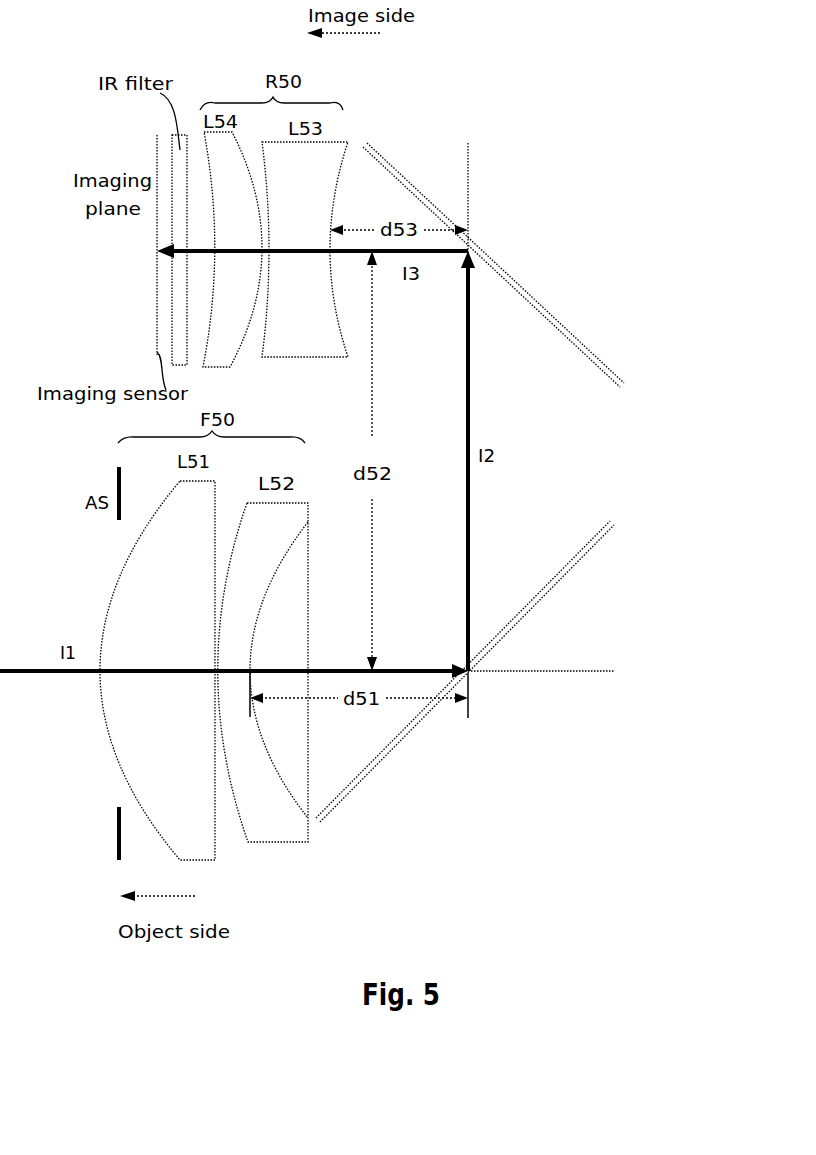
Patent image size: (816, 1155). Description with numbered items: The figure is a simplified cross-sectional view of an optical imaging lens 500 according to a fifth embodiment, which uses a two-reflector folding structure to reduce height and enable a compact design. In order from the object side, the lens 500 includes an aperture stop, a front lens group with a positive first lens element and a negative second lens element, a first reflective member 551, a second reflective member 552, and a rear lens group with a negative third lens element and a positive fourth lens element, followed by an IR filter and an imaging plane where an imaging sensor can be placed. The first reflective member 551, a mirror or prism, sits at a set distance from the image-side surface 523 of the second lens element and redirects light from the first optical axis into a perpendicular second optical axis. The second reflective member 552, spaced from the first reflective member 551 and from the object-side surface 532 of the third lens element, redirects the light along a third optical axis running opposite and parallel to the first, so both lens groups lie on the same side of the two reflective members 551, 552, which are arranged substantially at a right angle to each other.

The optical imaging lens 500 is at (614, 116).
The image-side surface 523 is at (263, 595).
The object-side surface 532 is at (338, 184).
The first reflective member 551 is at (418, 723).
The second reflective member 552 is at (570, 333).